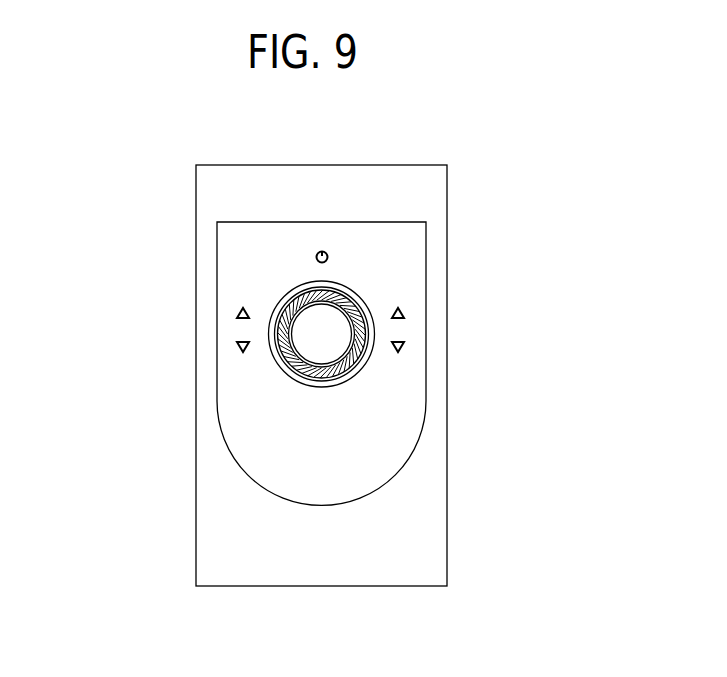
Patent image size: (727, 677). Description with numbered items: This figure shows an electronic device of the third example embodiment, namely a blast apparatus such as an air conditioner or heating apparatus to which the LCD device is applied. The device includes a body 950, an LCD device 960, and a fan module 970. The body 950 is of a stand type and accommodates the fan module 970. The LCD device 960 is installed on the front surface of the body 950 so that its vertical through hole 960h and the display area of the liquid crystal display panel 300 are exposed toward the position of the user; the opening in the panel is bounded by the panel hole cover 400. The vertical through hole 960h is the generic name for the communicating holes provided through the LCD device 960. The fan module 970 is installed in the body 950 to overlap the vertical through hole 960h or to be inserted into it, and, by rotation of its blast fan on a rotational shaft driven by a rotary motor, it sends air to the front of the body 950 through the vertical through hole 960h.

The body 950 is at (196, 586).
The liquid crystal display panel 300 is at (227, 280).
The LCD device 960 is at (112, 280).
The vertical through hole 960h is at (285, 307).
The panel hole cover 400 is at (277, 360).
The fan module 970 is at (347, 303).